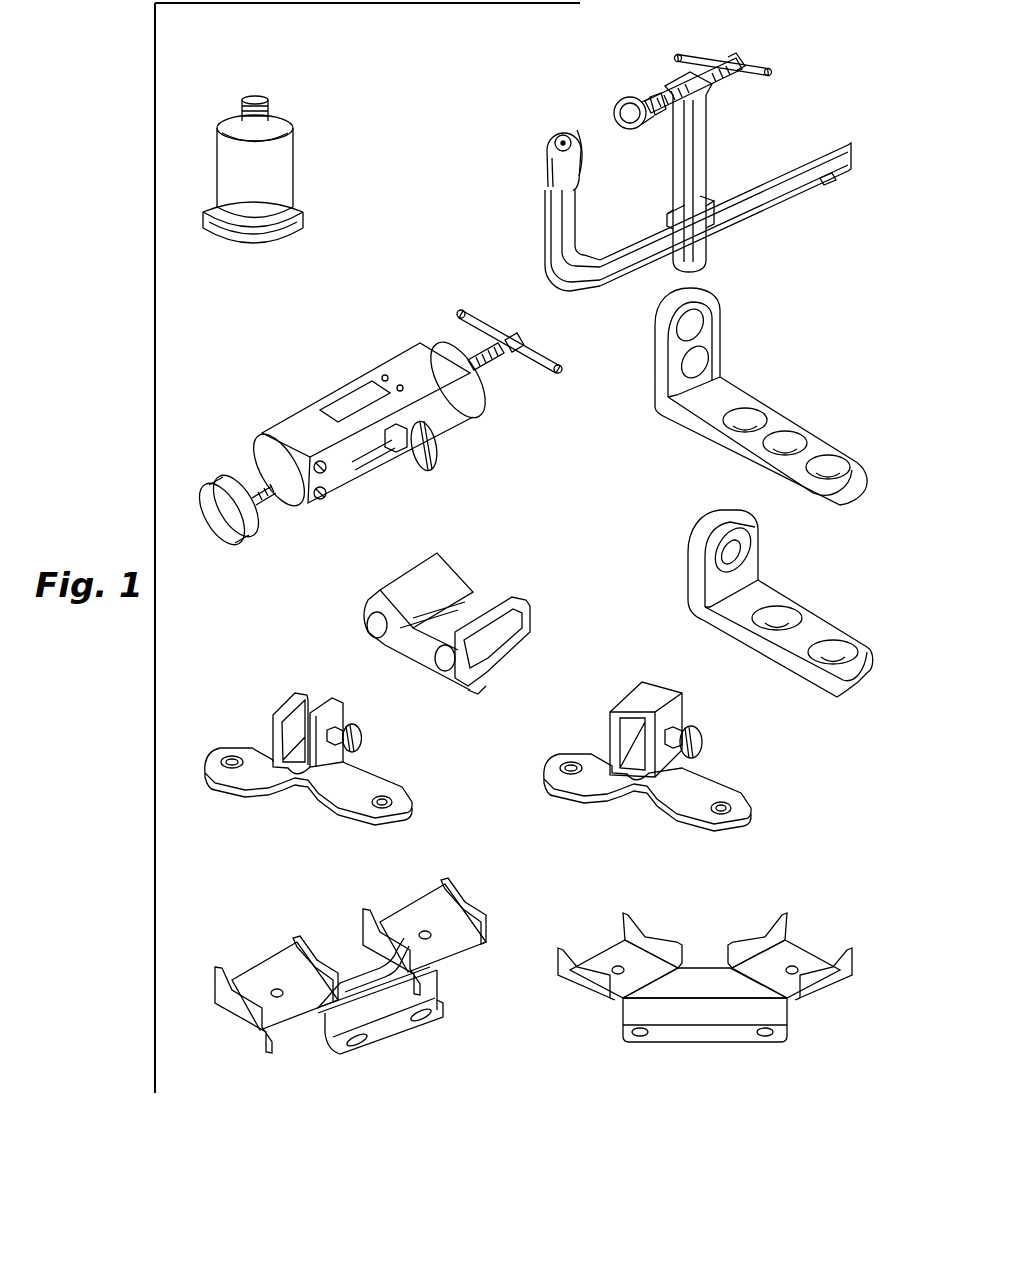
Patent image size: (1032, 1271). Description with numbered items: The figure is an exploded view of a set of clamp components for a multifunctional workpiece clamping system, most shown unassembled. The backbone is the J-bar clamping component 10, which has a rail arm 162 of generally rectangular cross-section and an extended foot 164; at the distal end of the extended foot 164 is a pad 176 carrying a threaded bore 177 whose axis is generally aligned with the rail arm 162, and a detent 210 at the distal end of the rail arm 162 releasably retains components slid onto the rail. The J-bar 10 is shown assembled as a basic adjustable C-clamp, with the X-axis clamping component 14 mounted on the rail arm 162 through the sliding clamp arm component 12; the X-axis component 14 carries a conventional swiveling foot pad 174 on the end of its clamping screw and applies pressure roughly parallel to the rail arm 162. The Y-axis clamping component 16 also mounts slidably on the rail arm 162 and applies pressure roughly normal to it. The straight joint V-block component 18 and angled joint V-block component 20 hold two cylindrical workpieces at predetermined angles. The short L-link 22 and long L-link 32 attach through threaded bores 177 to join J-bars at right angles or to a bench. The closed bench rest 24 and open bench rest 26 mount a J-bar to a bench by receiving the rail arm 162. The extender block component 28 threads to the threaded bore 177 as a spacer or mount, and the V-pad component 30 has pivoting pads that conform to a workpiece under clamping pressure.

The J-bar clamping component 10 is at (661, 166).
The sliding clamp arm component 12 is at (718, 148).
The X-axis clamping component 14 is at (738, 104).
The Y-axis clamping component 16 is at (314, 376).
The straight joint V-block component 18 is at (350, 957).
The angled joint V-block component 20 is at (708, 935).
The short L-link 22 is at (785, 585).
The closed bench rest 24 is at (700, 775).
The open bench rest 26 is at (363, 766).
The extender block component 28 is at (318, 150).
The V-pad component 30 is at (490, 583).
The long L-link 32 is at (750, 372).
The rail arm 162 is at (790, 185).
The extended foot 164 is at (566, 240).
The swiveling foot pad 174 is at (640, 130).
The pad 176 is at (524, 116).
The threaded bore 177 is at (553, 135).
The detent 210 is at (836, 184).